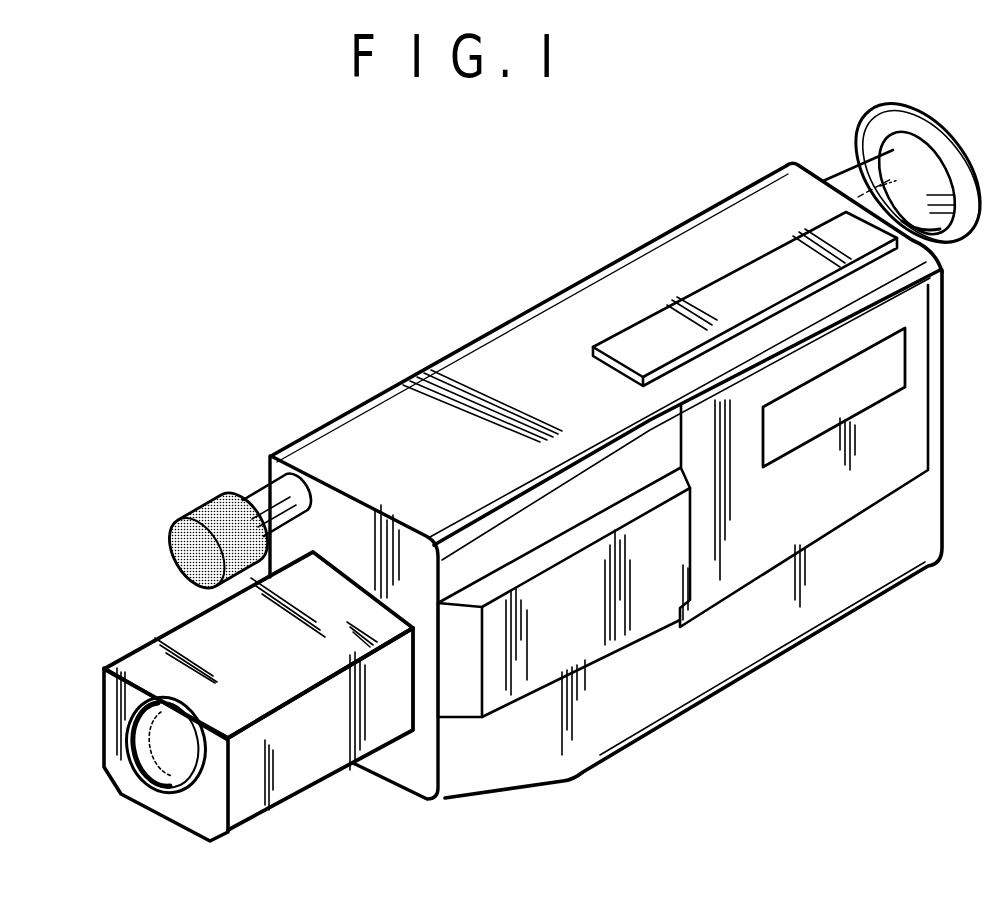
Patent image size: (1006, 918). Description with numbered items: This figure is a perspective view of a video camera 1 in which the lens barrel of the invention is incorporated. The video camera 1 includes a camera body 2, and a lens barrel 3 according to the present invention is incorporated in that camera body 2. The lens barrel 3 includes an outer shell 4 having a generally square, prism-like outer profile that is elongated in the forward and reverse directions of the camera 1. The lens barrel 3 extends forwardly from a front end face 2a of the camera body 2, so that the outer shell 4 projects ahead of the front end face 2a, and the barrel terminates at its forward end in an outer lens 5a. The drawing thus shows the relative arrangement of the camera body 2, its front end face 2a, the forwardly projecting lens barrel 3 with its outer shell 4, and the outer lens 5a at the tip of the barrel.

The video camera 1 is at (246, 426).
The camera body 2 is at (510, 318).
The front end face 2a is at (408, 780).
The lens barrel 3 is at (102, 692).
The outer shell 4 is at (300, 765).
The outer lens 5a is at (160, 725).